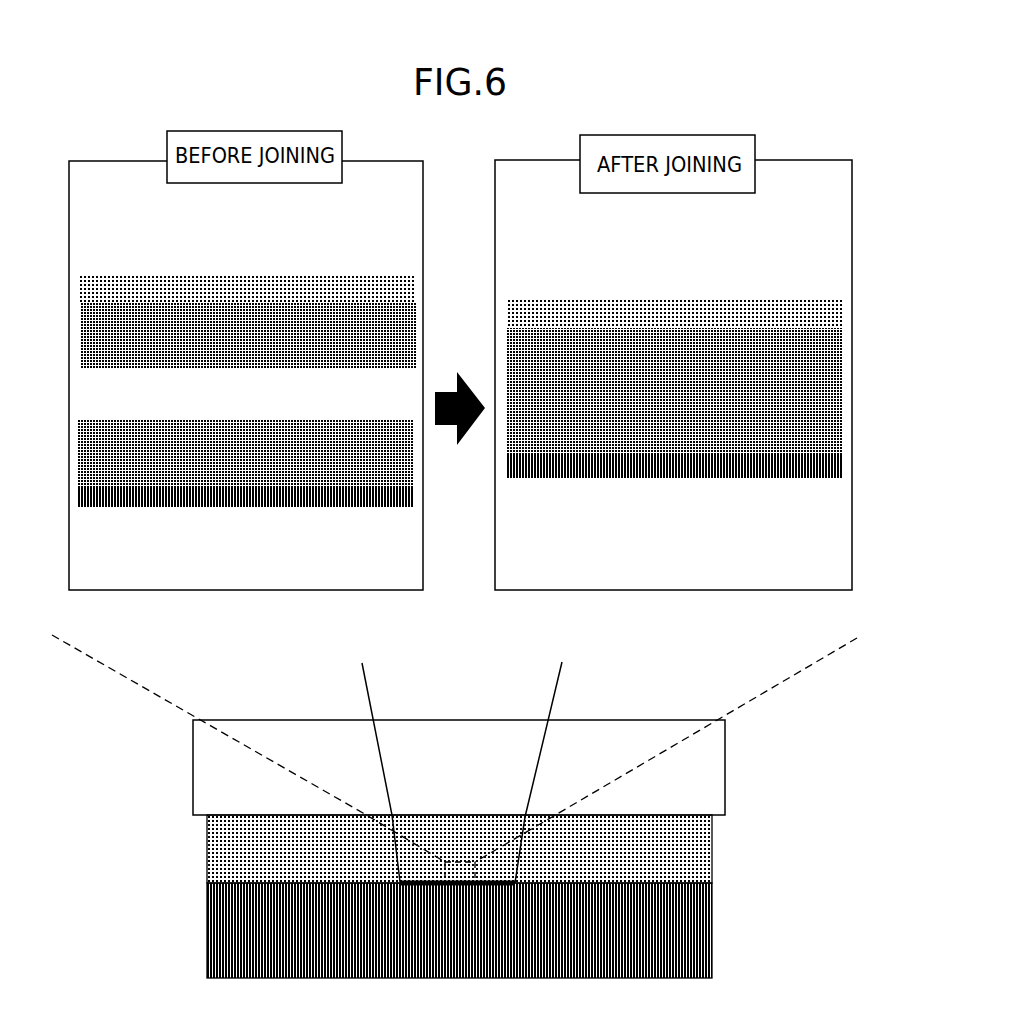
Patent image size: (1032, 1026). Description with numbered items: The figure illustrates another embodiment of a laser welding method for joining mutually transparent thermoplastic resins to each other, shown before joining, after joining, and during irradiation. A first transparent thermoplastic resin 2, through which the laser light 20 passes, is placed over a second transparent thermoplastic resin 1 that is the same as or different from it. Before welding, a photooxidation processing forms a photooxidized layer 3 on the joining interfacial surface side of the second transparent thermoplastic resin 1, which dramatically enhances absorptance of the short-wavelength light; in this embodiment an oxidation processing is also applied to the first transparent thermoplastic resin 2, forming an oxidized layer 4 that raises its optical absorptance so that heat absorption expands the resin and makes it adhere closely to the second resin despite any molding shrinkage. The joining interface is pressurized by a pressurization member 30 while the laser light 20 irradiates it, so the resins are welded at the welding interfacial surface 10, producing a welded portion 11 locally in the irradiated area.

The second transparent thermoplastic resin 1 is at (185, 498).
The first transparent thermoplastic resin 2 is at (187, 287).
The photooxidized layer 3 is at (293, 462).
The oxidized layer 4 is at (335, 322).
The welding interfacial surface 10 is at (710, 403).
The welded portion 11 is at (510, 887).
The laser light 20 is at (547, 738).
The pressurization member 30 is at (193, 792).